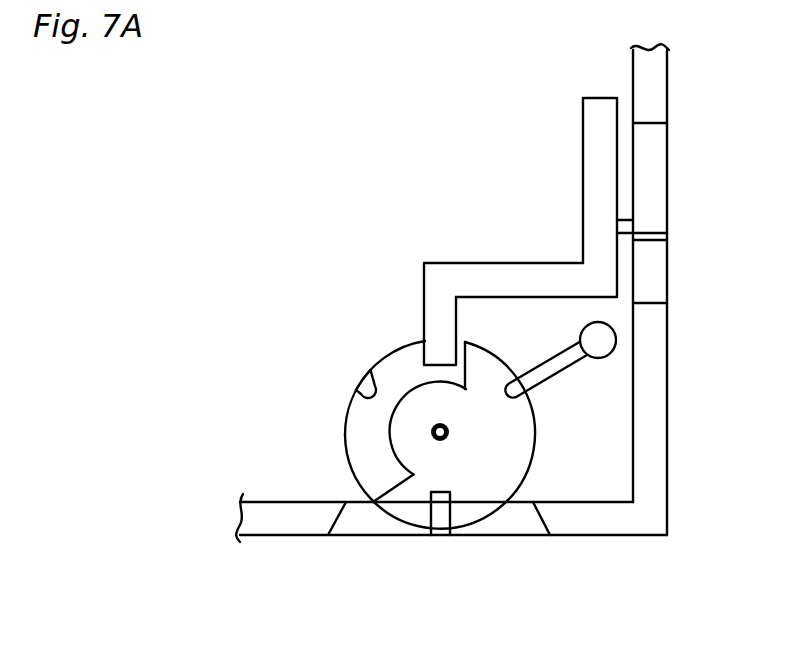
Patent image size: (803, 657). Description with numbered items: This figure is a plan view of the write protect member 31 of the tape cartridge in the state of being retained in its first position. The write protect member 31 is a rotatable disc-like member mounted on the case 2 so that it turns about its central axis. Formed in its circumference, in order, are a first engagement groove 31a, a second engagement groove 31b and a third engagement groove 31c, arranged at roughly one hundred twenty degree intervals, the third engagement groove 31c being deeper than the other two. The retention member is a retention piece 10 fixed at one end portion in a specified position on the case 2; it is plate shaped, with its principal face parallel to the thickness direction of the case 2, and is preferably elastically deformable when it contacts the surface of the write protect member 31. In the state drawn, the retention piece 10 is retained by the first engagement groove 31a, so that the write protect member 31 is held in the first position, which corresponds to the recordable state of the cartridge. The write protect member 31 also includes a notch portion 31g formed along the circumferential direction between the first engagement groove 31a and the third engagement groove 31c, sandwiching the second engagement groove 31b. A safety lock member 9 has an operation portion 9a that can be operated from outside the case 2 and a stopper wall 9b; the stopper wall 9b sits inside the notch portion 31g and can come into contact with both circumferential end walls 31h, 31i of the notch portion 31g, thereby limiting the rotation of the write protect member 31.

The case 2 is at (657, 366).
The safety lock member 9 is at (602, 110).
The operation portion 9a is at (652, 223).
The stopper wall 9b is at (433, 350).
The retention piece 10 is at (562, 357).
The write protect member 31 is at (392, 362).
The first engagement groove 31a is at (512, 398).
The second engagement groove 31b is at (362, 388).
The third engagement groove 31c is at (450, 508).
The notch portion 31g is at (355, 423).
The circumferential end wall 31h is at (462, 333).
The circumferential end wall 31i is at (393, 487).